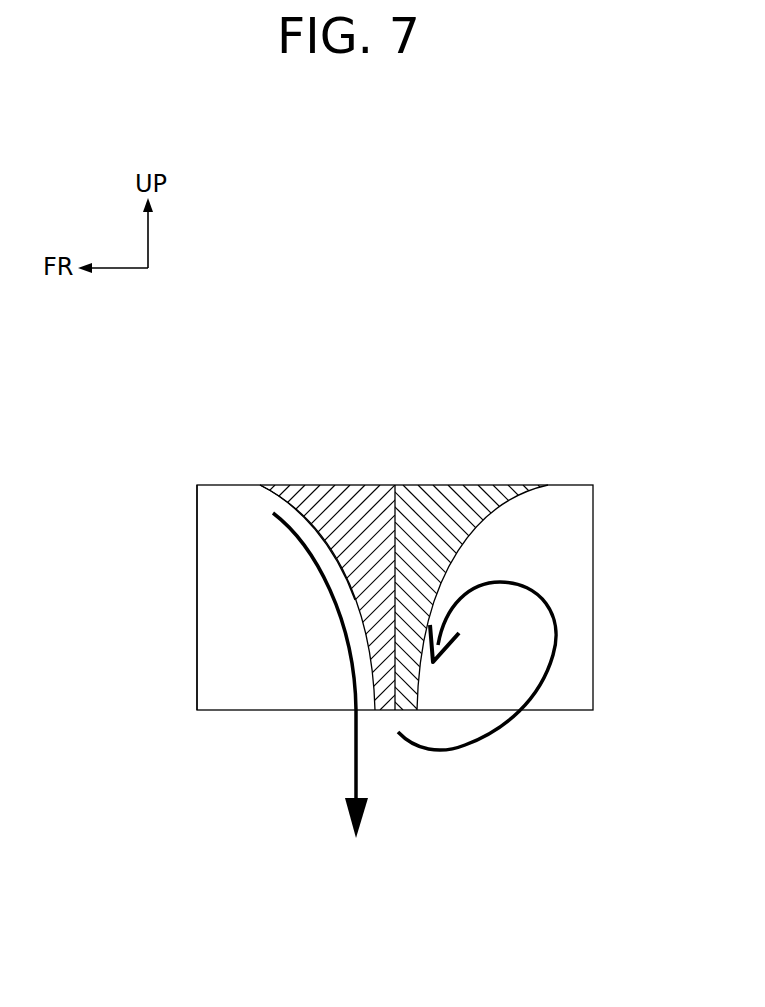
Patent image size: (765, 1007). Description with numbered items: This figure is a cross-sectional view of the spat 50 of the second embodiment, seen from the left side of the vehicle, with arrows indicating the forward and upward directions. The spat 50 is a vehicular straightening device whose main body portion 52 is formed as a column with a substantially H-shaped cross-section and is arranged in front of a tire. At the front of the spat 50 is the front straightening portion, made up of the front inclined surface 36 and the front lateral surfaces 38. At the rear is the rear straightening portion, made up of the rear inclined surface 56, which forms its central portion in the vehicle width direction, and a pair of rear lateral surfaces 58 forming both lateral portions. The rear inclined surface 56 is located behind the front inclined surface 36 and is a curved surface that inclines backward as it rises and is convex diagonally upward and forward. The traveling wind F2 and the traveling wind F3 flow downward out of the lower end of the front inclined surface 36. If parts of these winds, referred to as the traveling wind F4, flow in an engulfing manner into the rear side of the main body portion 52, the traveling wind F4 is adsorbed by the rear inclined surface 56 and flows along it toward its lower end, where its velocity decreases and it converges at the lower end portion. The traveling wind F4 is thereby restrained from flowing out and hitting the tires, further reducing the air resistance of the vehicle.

The front inclined surface 36 is at (280, 490).
The front lateral surfaces 38 is at (217, 630).
The spat 50 is at (399, 534).
The main body portion 52 is at (338, 483).
The rear inclined surface 56 is at (503, 494).
The rear lateral surfaces 58 is at (572, 525).
The traveling wind F2 is at (295, 675).
The traveling wind F3 is at (350, 745).
The traveling wind F4 is at (510, 733).